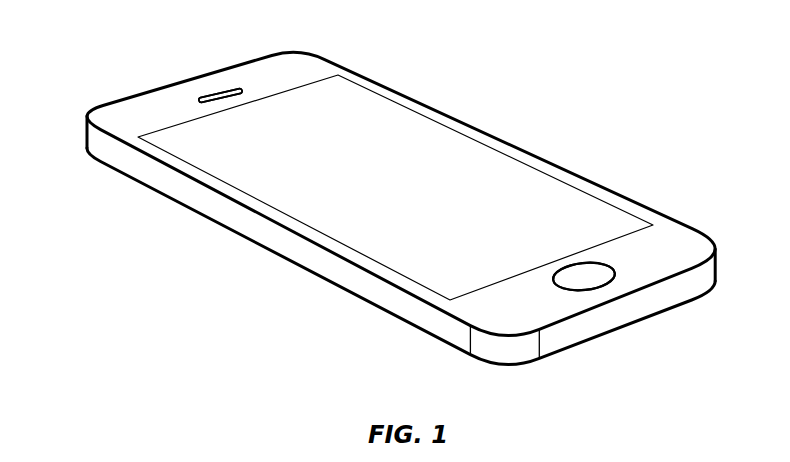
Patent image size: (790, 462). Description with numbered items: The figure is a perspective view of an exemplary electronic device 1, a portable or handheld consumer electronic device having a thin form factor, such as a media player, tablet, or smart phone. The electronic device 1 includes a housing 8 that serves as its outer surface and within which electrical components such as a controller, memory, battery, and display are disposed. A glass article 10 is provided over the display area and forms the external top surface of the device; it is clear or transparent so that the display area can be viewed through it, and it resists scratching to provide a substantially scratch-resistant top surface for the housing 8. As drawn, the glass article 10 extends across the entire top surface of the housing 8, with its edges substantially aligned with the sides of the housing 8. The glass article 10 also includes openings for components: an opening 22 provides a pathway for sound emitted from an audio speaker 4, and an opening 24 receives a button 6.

The electronic device 1 is at (96, 26).
The audio speaker 4 is at (209, 98).
The button 6 is at (592, 287).
The housing 8 is at (335, 269).
The glass article 10 is at (495, 168).
The opening 22 is at (236, 91).
The opening 24 is at (590, 288).